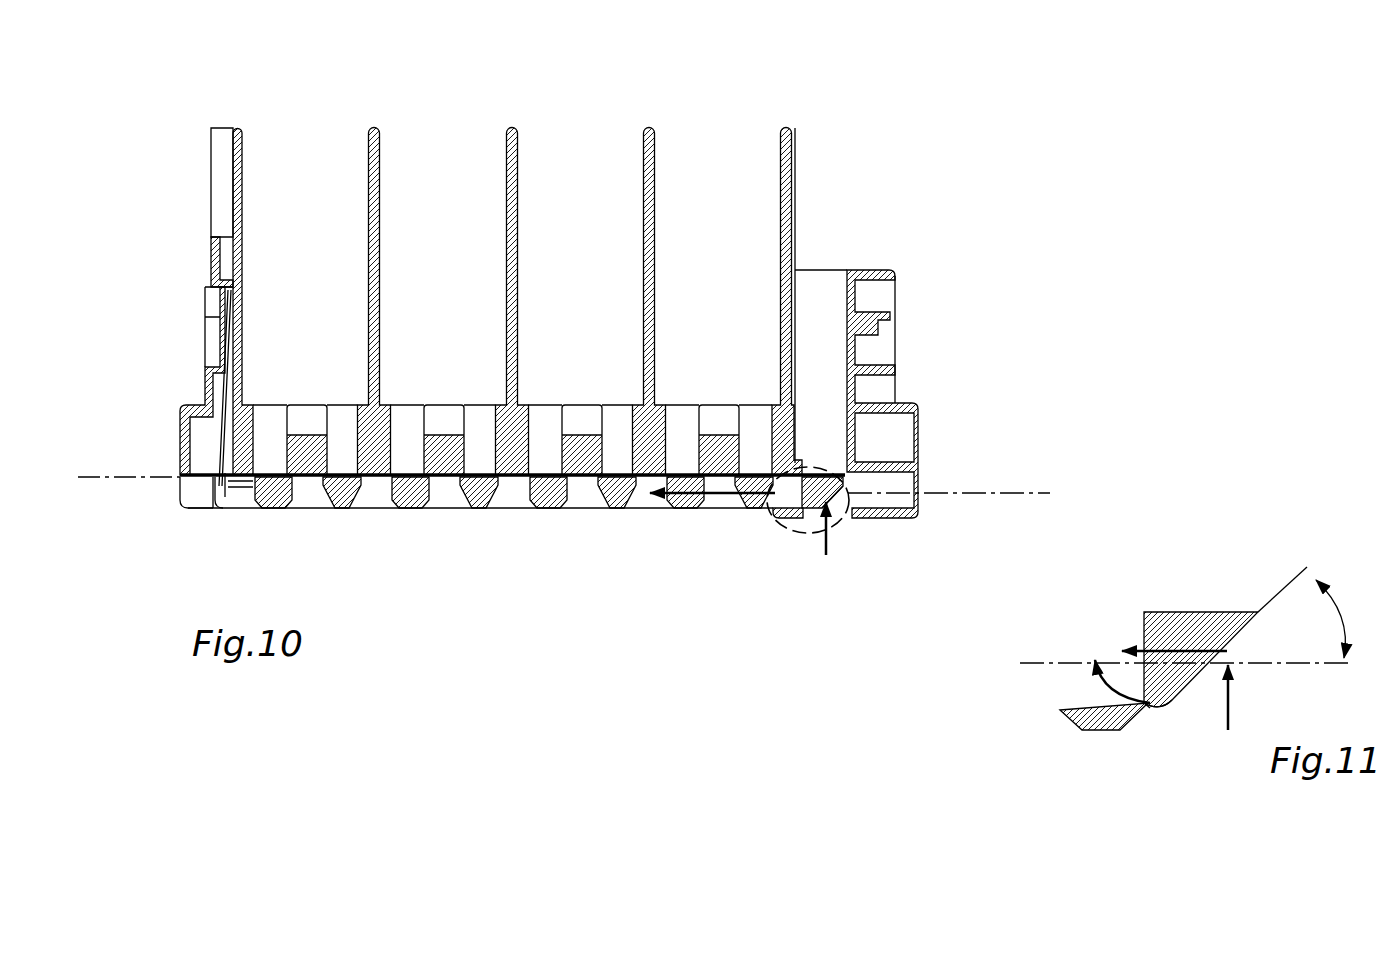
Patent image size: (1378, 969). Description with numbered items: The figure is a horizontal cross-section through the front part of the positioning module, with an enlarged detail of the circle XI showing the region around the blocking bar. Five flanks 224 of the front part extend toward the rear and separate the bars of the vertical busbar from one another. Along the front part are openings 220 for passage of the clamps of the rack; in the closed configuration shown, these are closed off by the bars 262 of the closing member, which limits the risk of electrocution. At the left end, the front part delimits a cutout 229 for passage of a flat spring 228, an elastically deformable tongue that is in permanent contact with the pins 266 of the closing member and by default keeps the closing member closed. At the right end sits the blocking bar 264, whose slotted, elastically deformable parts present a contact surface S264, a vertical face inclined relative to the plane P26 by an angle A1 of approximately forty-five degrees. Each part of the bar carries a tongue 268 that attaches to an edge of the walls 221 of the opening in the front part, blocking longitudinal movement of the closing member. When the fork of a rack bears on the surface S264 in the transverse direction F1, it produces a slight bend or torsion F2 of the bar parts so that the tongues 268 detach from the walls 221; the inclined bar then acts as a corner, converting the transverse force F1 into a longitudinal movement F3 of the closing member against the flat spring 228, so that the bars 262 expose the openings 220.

In FIG. 10, the flanks 224 is at (783, 137).
In FIG. 10, the openings 220 is at (343, 430).
In FIG. 10, the bars 262 is at (548, 510).
In FIG. 10, the flat spring 228 is at (224, 430).
In FIG. 10, the cutout 229 is at (196, 482).
In FIG. 10, the pins 266 is at (240, 488).
In FIG. 10, the blocking bar 264 is at (808, 476).
In FIG. 11, the blocking bar 264 is at (1193, 627).
In FIG. 10, the contact surface S264 is at (840, 505).
In FIG. 11, the contact surface S264 is at (1192, 700).
In FIG. 11, the tongue 268 is at (1158, 711).
In FIG. 11, the walls 221 is at (1077, 722).
In FIG. 10, the plane P26 is at (971, 491).
In FIG. 11, the plane P26 is at (1188, 676).
In FIG. 11, the angle A1 is at (1304, 612).
In FIG. 10, the transverse direction F1 is at (840, 542).
In FIG. 11, the transverse direction F1 is at (1242, 699).
In FIG. 11, the torsion F2 is at (1111, 668).
In FIG. 10, the longitudinal movement F3 is at (708, 511).
In FIG. 11, the longitudinal movement F3 is at (1167, 638).
In FIG. 10, the circle XI is at (792, 552).